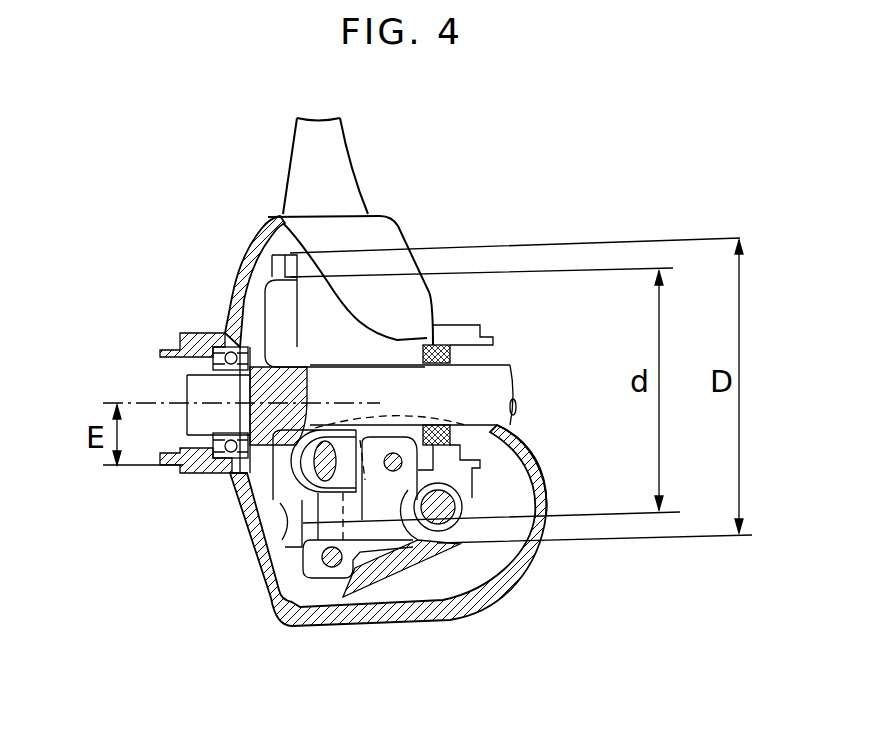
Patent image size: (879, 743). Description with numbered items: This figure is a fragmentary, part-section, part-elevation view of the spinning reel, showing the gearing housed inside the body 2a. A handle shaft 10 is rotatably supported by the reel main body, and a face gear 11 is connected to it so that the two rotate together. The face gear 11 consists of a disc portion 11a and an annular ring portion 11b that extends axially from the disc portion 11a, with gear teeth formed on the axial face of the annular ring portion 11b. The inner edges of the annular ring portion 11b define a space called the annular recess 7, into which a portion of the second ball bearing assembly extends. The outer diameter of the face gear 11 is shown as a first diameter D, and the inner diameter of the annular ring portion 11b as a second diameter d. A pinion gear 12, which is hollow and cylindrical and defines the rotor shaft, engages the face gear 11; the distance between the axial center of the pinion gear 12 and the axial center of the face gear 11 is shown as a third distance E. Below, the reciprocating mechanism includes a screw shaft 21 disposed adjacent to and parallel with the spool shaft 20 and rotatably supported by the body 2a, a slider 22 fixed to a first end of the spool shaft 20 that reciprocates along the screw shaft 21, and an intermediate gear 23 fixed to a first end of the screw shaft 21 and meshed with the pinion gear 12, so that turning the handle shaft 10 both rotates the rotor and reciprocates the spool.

The body 2a is at (230, 292).
The annular recess 7 is at (280, 507).
The handle shaft 10 is at (497, 383).
The face gear 11 is at (265, 262).
The disc portion 11a is at (260, 335).
The annular ring portion 11b is at (292, 268).
The pinion gear 12 is at (332, 566).
The spool shaft 20 is at (343, 460).
The screw shaft 21 is at (450, 520).
The slider 22 is at (388, 513).
The intermediate gear 23 is at (510, 483).